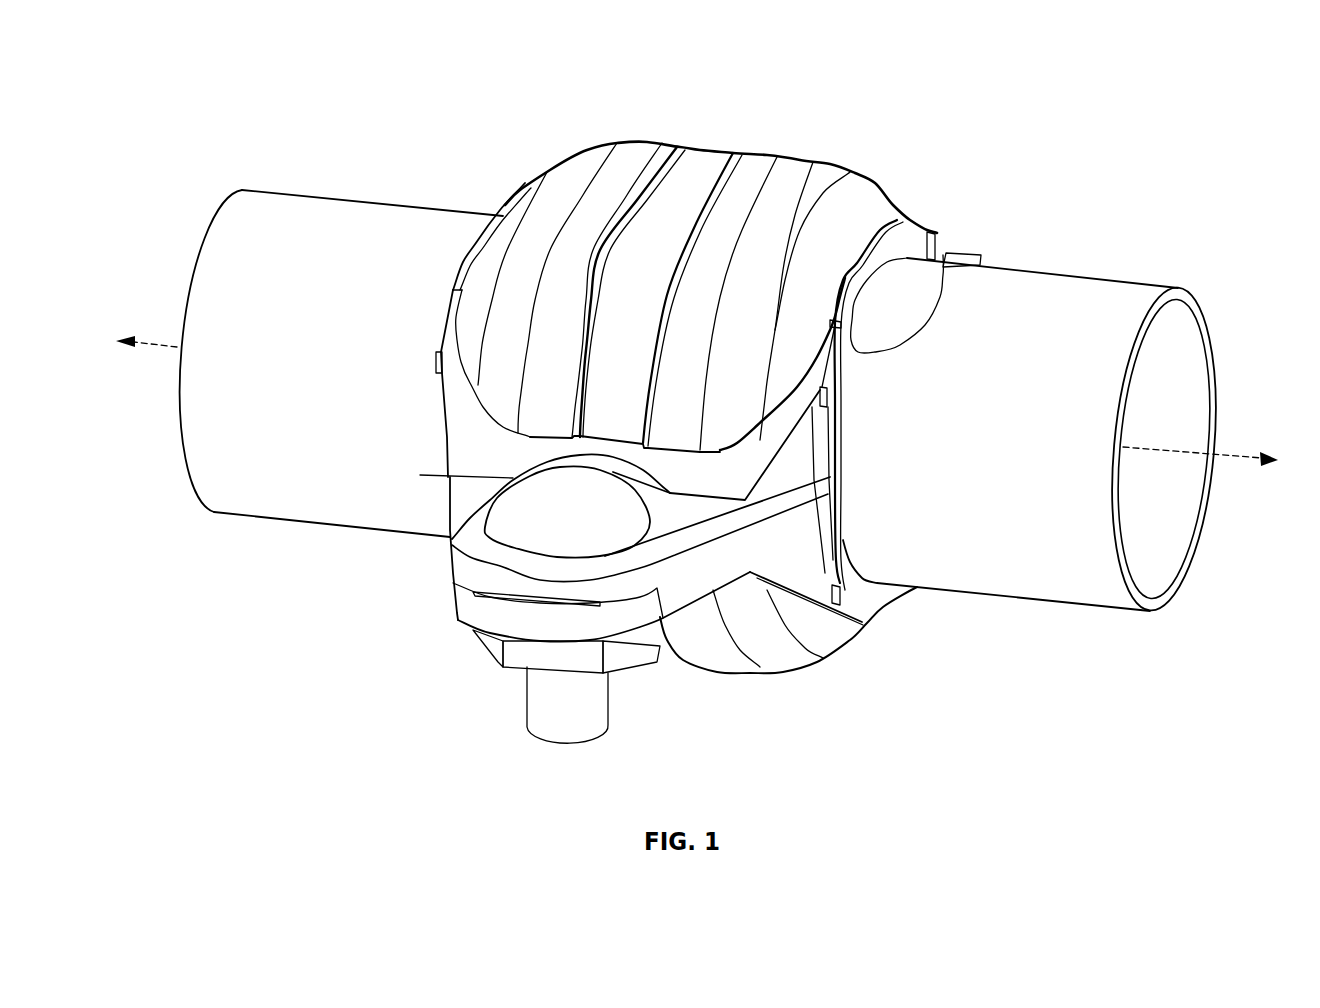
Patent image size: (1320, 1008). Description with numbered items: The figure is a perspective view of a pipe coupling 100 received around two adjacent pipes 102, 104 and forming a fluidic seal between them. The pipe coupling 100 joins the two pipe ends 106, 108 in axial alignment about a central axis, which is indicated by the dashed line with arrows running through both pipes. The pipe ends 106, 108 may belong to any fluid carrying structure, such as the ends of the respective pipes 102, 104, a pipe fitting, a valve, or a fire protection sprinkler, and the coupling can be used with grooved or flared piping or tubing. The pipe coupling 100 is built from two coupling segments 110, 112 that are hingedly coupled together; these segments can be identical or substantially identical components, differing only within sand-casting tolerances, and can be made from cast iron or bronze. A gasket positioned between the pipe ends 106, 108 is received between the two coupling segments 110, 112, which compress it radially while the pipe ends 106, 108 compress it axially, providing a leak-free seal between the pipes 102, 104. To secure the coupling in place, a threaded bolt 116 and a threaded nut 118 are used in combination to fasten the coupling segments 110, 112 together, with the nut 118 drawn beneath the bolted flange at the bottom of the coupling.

The pipe coupling 100 is at (866, 118).
The pipe 102 is at (1113, 323).
The pipe 104 is at (310, 213).
The pipe end 106 is at (943, 255).
The pipe end 108 is at (476, 253).
The coupling segment 110 is at (855, 633).
The coupling segment 112 is at (648, 142).
The threaded bolt 116 is at (507, 510).
The threaded nut 118 is at (493, 658).